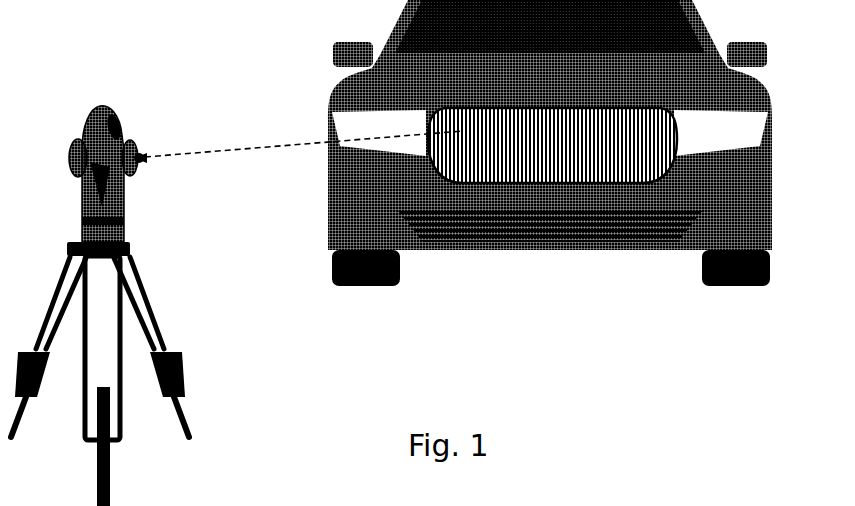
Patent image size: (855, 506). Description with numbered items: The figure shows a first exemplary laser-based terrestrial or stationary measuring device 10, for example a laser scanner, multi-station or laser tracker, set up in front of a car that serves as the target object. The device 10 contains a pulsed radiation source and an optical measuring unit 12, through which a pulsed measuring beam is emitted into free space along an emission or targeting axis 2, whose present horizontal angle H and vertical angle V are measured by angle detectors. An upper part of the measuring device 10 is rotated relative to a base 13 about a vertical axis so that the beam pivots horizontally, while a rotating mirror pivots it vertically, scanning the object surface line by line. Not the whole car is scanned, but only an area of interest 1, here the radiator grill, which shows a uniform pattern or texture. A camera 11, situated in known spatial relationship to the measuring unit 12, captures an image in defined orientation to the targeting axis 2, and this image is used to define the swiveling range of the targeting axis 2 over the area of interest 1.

The area of interest 1 is at (567, 165).
The targeting axis 2 is at (298, 134).
The measuring device 10 is at (125, 274).
The camera 11 is at (111, 127).
The optical measuring unit 12 is at (183, 183).
The base 13 is at (125, 381).